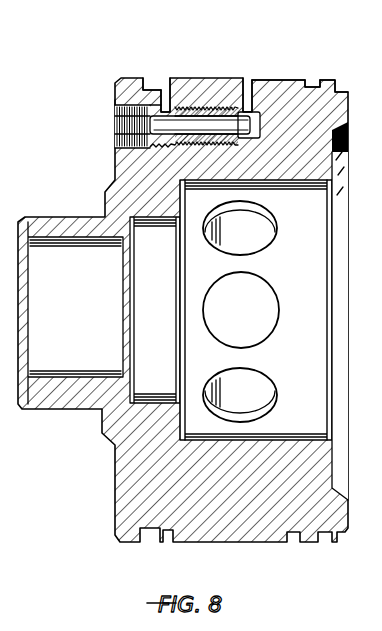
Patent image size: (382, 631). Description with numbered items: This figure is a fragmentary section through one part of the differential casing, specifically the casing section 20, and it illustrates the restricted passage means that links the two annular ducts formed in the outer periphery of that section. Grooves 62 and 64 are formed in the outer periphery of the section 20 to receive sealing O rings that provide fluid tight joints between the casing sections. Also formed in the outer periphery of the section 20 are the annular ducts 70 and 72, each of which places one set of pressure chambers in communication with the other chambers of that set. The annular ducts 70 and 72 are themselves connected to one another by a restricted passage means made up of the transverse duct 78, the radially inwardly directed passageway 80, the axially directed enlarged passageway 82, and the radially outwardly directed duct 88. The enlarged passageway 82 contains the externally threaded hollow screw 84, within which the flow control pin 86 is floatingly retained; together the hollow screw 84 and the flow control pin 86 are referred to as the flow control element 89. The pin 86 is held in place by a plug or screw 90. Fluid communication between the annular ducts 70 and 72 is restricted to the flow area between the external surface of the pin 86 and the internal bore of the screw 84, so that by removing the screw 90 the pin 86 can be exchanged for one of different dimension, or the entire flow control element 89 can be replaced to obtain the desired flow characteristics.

The casing section 20 is at (108, 171).
The groove 62 is at (152, 88).
The groove 64 is at (304, 82).
The annular duct 70 is at (167, 80).
The annular duct 72 is at (296, 82).
The transverse duct 78 is at (268, 78).
The radially inwardly directed passageway 80 is at (250, 97).
The axially directed enlarged passageway 82 is at (249, 141).
The externally threaded hollow screw 84 is at (194, 110).
The flow control pin 86 is at (118, 135).
The radially outwardly directed duct 88 is at (132, 100).
The flow control element 89 is at (180, 152).
The plug or screw 90 is at (116, 118).